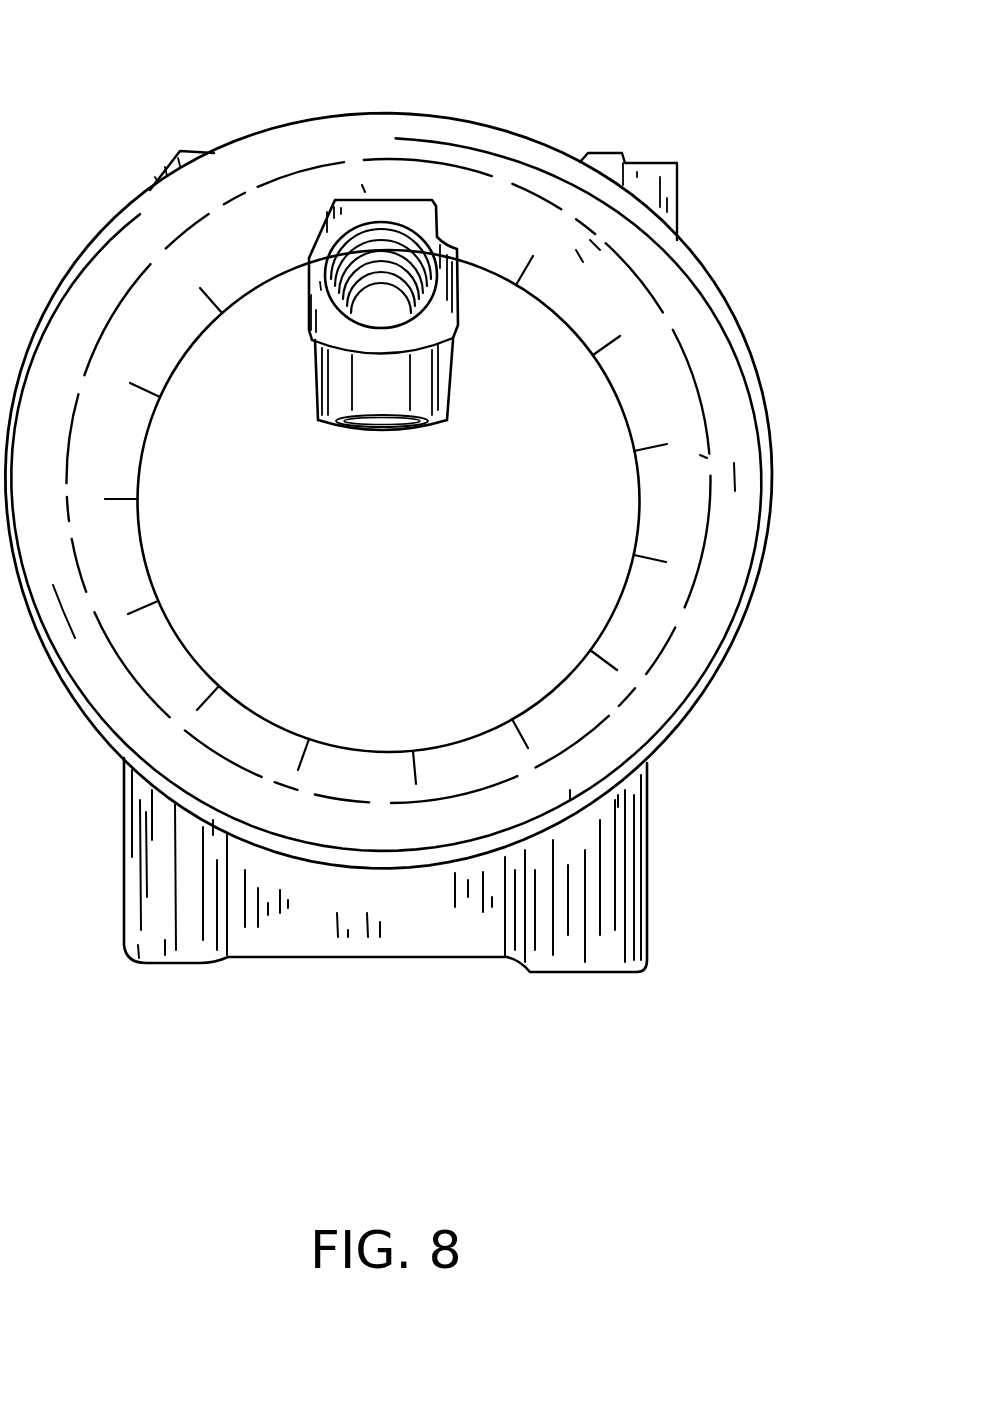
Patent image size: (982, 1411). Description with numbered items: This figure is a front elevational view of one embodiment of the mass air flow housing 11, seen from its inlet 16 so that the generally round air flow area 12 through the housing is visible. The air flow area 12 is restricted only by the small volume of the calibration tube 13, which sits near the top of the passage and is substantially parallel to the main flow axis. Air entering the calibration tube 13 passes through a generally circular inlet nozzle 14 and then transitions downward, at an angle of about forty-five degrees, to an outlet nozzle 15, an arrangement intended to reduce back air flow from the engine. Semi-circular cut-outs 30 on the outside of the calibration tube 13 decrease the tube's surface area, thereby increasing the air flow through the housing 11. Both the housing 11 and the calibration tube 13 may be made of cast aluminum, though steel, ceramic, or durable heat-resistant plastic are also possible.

The mass air flow housing 11 is at (247, 138).
The air flow area 12 is at (386, 517).
The calibration tube 13 is at (313, 360).
The inlet nozzle 14 is at (380, 200).
The outlet nozzle 15 is at (433, 428).
The inlet 16 is at (732, 665).
The semi-circular cut-outs 30 is at (320, 217).